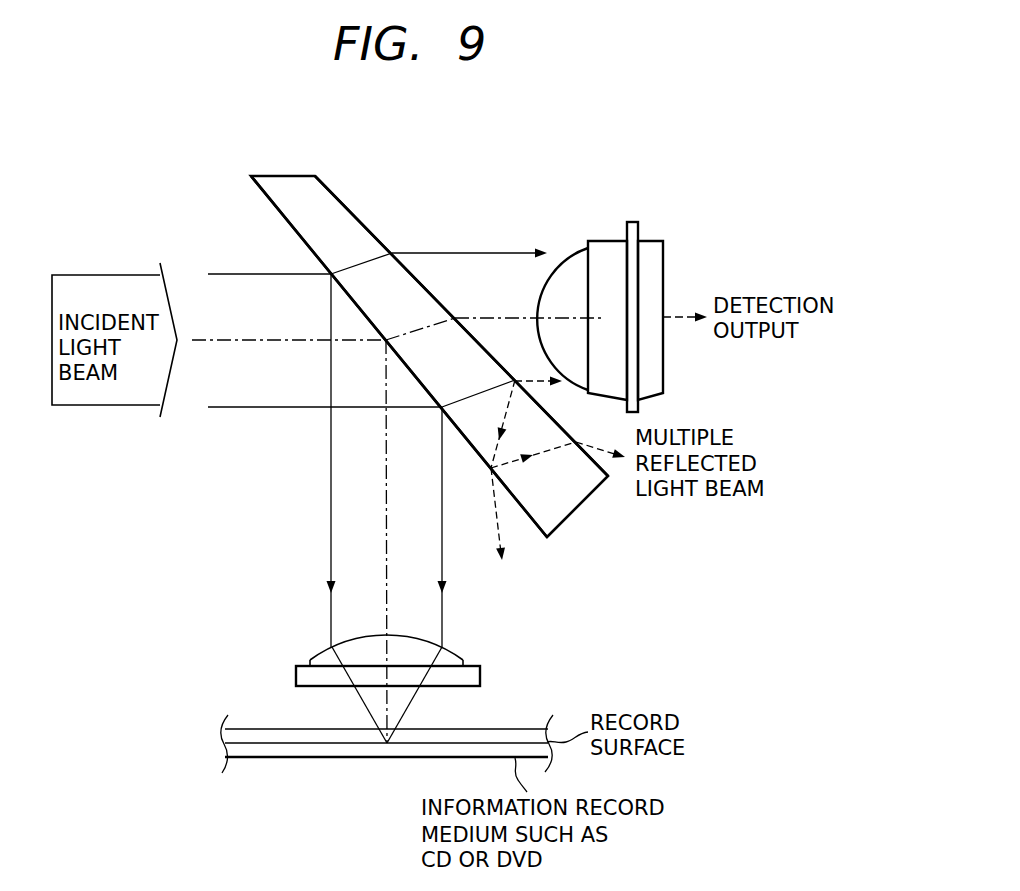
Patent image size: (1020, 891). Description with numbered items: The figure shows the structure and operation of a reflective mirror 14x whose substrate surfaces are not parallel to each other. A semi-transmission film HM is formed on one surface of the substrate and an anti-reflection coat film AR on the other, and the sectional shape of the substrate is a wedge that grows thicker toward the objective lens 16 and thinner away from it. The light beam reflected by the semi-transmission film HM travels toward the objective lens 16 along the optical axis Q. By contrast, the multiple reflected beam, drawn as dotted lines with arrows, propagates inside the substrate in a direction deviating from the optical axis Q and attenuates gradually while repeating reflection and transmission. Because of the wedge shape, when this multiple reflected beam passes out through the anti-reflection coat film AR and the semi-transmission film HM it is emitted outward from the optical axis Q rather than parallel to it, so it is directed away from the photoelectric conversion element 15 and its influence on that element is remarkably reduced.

The reflective mirror 14x is at (585, 503).
The semi-transmission film HM is at (283, 218).
The anti-reflection coat film AR is at (328, 188).
The optical axis Q is at (234, 340).
The photoelectric conversion element 15 is at (601, 240).
The objective lens 16 is at (473, 676).